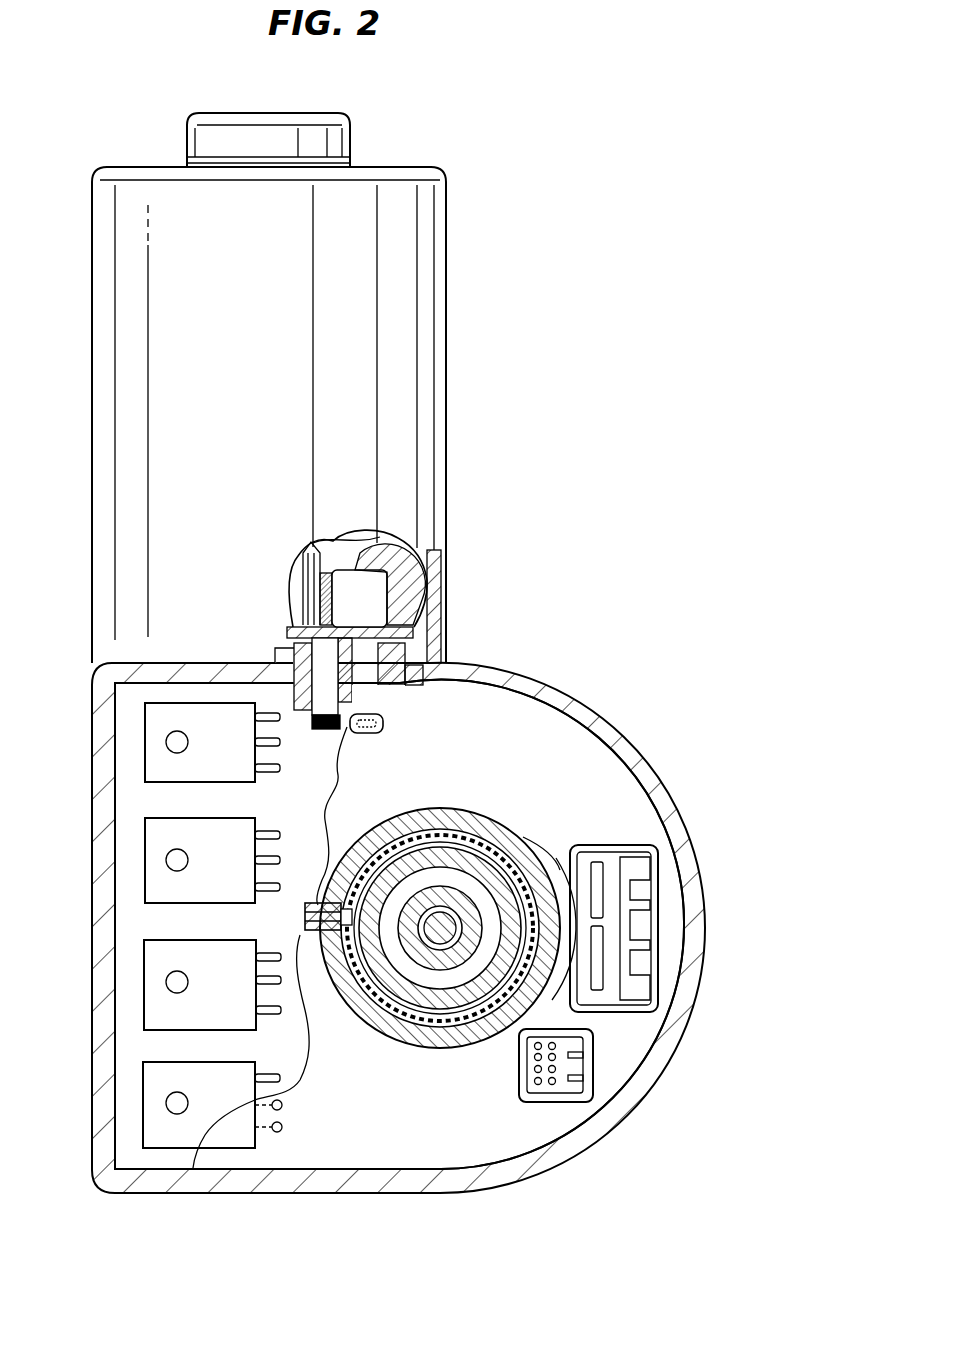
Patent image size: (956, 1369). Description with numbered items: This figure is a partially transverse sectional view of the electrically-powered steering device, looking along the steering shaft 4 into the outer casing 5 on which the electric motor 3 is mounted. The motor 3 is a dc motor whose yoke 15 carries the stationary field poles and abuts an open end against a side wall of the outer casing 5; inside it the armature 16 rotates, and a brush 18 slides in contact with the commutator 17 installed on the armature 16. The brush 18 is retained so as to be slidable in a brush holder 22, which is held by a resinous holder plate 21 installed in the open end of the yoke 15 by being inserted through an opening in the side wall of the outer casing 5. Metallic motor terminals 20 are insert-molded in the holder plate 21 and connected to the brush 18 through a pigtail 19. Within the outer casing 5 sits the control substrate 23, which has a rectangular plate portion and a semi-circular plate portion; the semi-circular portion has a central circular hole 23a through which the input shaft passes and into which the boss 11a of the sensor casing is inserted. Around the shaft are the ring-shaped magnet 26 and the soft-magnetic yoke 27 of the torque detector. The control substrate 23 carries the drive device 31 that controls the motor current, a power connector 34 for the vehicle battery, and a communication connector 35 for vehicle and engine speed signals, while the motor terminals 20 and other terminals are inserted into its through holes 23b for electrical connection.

The electric motor 3 is at (455, 292).
The steering shaft 4 is at (448, 992).
The outer casing 5 is at (650, 768).
The boss 11a is at (480, 813).
The yoke 15 is at (441, 560).
The armature 16 is at (353, 535).
The commutator 17 is at (303, 580).
The brush 18 is at (325, 607).
The pigtail 19 is at (440, 598).
The motor terminals 20 is at (367, 685).
The holder plate 21 is at (418, 666).
The brush holder 22 is at (345, 573).
The control substrate 23 is at (473, 1157).
The circular hole 23a is at (523, 837).
The through holes 23b is at (385, 716).
The magnet 26 is at (433, 1007).
The magnetic yoke 27 is at (372, 1003).
The drive device 31 is at (150, 883).
The power connector 34 is at (667, 912).
The communication connector 35 is at (594, 1070).